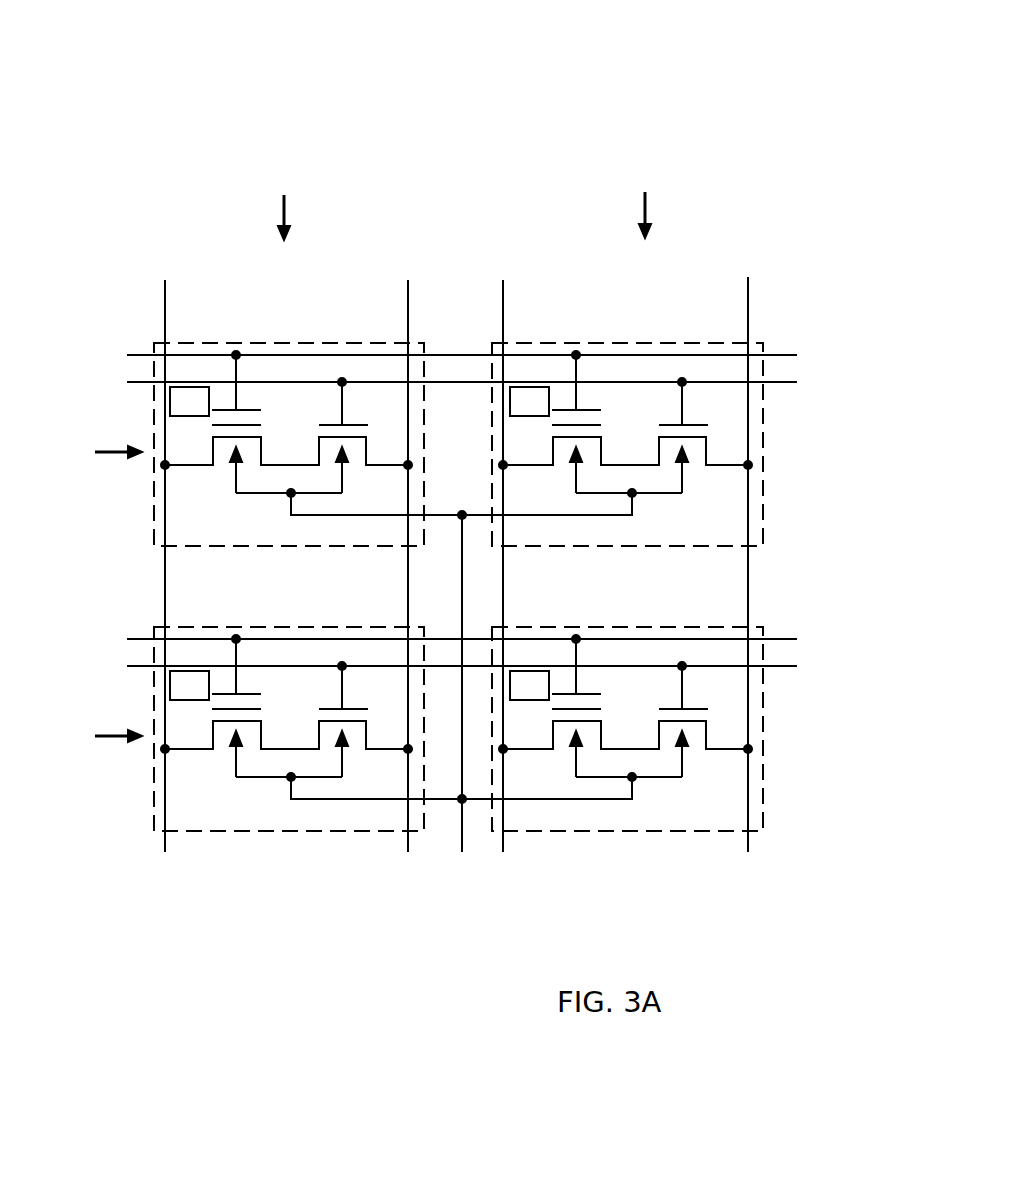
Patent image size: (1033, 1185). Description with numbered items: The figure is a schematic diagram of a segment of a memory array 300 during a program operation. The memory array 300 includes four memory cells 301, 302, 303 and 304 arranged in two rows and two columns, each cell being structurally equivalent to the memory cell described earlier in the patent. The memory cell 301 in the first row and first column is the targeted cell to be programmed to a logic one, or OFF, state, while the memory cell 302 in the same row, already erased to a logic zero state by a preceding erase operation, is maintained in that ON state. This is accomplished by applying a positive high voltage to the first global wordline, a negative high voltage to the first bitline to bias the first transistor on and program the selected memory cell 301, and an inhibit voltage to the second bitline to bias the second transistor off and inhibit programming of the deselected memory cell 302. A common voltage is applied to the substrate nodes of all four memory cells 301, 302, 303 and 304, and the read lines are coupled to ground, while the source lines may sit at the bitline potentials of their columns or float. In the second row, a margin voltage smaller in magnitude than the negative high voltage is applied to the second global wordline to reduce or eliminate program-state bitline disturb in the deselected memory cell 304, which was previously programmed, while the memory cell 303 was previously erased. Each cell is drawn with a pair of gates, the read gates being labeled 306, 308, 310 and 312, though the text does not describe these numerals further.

The memory array 300 is at (556, 79).
The memory cell 301 is at (212, 541).
The memory cell 302 is at (552, 541).
The memory cell 303 is at (212, 825).
The memory cell 304 is at (552, 825).
The read gate of transistor T1 306 is at (328, 414).
The read gate of transistor T2 308 is at (668, 414).
The read gate of transistor T3 310 is at (328, 698).
The read gate of transistor T4 312 is at (668, 698).